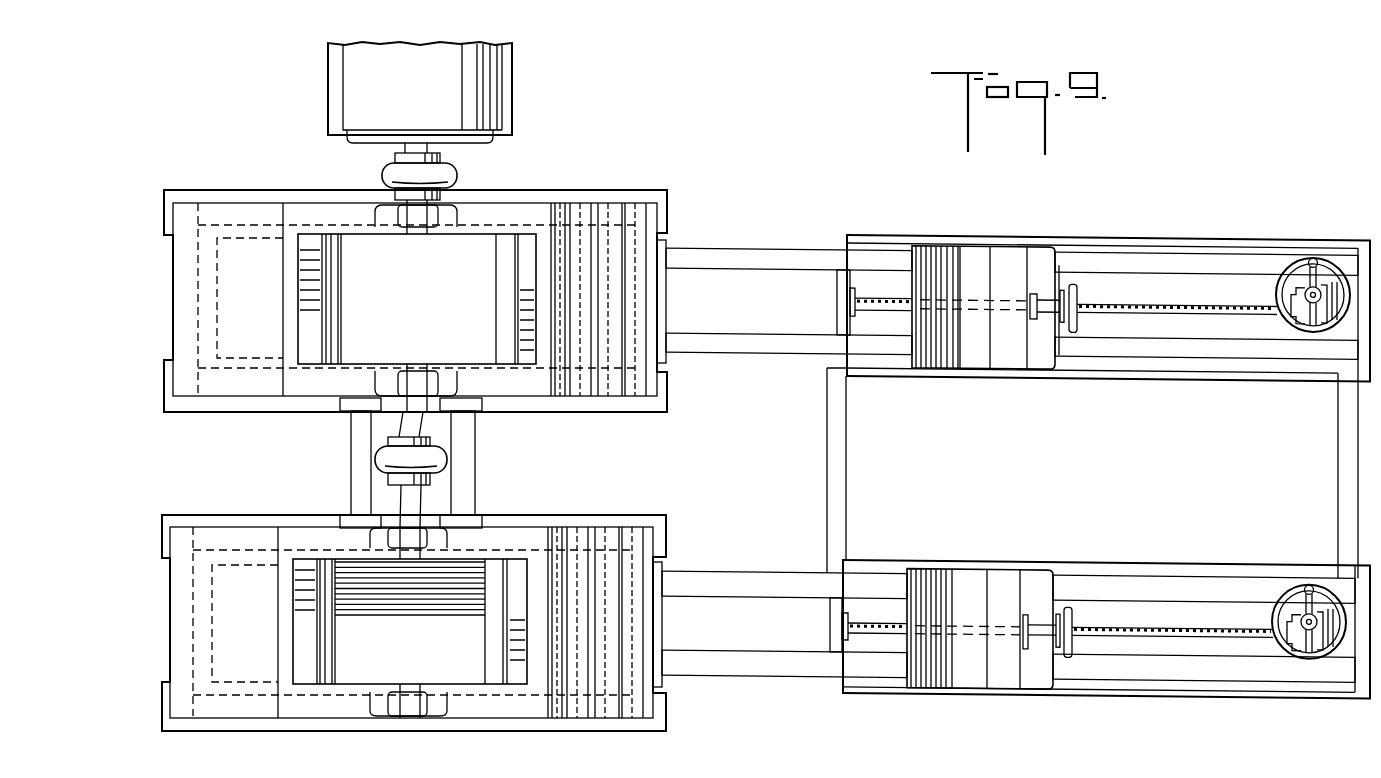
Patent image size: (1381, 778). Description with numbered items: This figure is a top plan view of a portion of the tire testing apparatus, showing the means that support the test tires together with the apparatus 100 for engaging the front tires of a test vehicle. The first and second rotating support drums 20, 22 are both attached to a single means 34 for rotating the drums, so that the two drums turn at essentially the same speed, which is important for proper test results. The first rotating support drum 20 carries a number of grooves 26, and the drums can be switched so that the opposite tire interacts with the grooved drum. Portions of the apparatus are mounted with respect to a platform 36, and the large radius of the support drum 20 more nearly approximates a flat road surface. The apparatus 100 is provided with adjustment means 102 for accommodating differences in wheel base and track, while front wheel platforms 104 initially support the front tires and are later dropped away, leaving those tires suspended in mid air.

The first rotating support drum 20 is at (424, 655).
The second rotating support drum 22 is at (431, 307).
The grooves 26 is at (362, 621).
The means for rotating the drums 34 is at (500, 102).
The platform 36 is at (546, 216).
The apparatus for engaging front tires 100 is at (998, 388).
The adjustment means 102 is at (1277, 261).
The front wheel platforms 104 is at (928, 370).